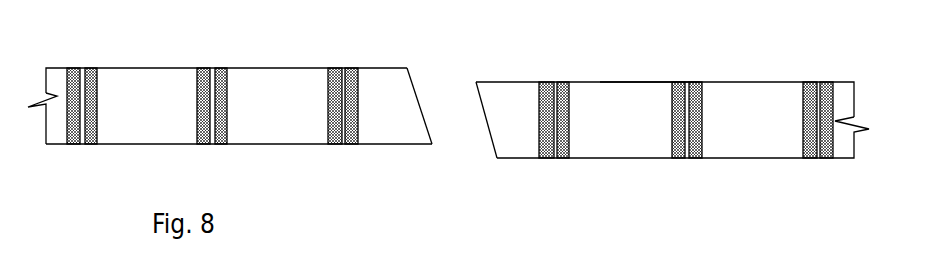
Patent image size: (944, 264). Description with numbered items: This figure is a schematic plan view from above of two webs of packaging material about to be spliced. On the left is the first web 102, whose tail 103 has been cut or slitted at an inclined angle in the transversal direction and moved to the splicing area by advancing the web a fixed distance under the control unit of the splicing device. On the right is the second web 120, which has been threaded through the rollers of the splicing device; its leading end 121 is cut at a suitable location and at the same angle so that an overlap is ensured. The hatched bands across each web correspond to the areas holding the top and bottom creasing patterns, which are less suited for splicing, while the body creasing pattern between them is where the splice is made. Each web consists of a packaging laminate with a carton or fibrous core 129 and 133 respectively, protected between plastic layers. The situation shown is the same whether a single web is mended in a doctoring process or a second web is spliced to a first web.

The carton core 129 is at (413, 86).
The web 102 is at (283, 146).
The tail 103 is at (420, 146).
The leading end 121 is at (512, 82).
The second web 120 is at (640, 82).
The carton core 133 is at (488, 127).